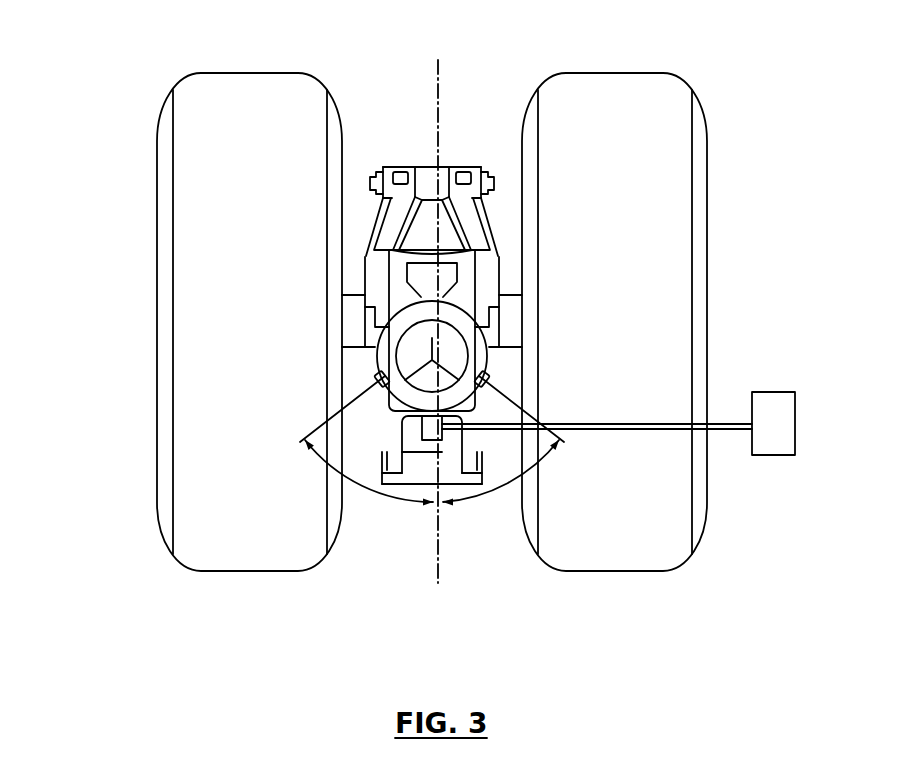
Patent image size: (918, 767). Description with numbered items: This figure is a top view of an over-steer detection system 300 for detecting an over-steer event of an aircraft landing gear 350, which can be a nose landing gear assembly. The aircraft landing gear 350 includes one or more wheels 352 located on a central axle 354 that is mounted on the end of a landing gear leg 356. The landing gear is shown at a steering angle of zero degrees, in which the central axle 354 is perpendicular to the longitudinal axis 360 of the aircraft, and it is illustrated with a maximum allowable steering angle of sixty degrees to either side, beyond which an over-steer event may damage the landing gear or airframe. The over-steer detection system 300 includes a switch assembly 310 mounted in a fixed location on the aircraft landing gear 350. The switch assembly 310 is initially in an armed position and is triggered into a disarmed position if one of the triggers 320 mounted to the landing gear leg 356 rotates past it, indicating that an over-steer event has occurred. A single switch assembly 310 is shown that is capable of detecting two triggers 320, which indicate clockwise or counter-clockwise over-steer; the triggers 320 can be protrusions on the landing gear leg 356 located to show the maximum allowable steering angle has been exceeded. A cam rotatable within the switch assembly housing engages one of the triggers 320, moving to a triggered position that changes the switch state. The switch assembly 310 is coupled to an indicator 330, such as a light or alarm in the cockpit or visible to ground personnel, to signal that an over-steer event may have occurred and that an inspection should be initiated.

The over-steer detection system 300 is at (497, 562).
The switch assembly 310 is at (441, 439).
The triggers 320 is at (380, 384).
The indicator 330 is at (783, 392).
The aircraft landing gear 350 is at (135, 297).
The wheels 352 is at (273, 268).
The central axle 354 is at (523, 320).
The landing gear leg 356 is at (382, 345).
The longitudinal axis 360 is at (438, 87).